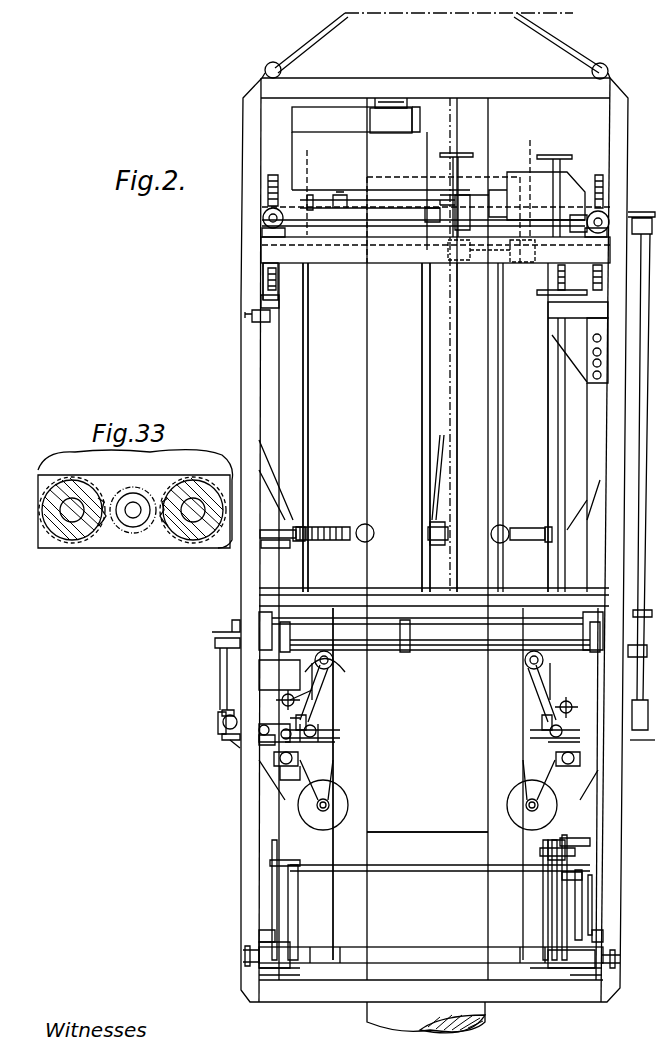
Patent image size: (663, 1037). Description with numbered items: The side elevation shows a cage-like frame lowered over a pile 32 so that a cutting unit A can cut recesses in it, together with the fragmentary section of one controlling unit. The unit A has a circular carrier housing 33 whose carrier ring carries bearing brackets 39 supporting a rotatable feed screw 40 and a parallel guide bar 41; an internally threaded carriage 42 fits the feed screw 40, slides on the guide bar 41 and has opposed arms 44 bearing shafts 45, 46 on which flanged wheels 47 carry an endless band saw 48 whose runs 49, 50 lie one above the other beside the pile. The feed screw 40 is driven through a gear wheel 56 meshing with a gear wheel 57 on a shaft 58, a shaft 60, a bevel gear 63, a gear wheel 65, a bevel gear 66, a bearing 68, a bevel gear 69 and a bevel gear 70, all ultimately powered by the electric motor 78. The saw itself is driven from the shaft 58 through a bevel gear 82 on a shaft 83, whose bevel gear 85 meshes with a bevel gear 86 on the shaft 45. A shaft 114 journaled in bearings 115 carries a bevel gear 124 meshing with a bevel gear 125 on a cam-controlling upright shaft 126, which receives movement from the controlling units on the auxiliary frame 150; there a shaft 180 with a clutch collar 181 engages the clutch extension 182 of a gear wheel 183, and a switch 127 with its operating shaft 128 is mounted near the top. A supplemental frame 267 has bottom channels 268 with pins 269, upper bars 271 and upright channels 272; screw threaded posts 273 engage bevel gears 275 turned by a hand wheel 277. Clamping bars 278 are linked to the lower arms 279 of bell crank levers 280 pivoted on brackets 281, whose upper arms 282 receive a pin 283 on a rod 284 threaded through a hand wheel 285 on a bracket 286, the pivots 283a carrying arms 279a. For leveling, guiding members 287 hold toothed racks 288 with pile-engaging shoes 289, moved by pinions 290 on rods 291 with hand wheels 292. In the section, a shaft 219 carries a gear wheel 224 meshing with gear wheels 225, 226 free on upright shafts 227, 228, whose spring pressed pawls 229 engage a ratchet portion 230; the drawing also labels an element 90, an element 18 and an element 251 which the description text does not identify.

In FIG. 2, the switch 127 is at (392, 106).
In FIG. 2, the operating shaft 128 is at (356, 120).
In FIG. 2, the auxiliary frame 150 is at (315, 143).
In FIG. 33, the auxiliary frame 150 is at (105, 570).
In FIG. 2, the hand wheel 292 is at (322, 155).
In FIG. 2, the electric motor 78 is at (517, 180).
In FIG. 2, the shaft 180 is at (360, 200).
In FIG. 2, the gear wheel 183 is at (468, 196).
In FIG. 2, the clutch collar 181 is at (441, 214).
In FIG. 2, the hand wheel 277 is at (568, 212).
In FIG. 2, the clutch extension 182 is at (470, 212).
In FIG. 2, the bevel gear 275 is at (262, 242).
In FIG. 2, the screw threaded post 273 is at (268, 200).
In FIG. 2, the upper bar 271 is at (252, 316).
In FIG. 2, the rod 284 is at (558, 270).
In FIG. 2, the hand wheel 285 is at (545, 296).
In FIG. 2, the bracket 286 is at (565, 345).
In FIG. 2, the supplemental frame 267 is at (265, 350).
In FIG. 2, the upright channel 272 is at (285, 405).
In FIG. 2, the cam-controlling upright shaft 126 is at (425, 407).
In FIG. 2, the rod 291 is at (312, 460).
In FIG. 2, the pile 32 is at (500, 488).
In FIG. 2, the toothed rack 288 is at (338, 527).
In FIG. 2, the pile-engaging shoe 289 is at (368, 530).
In FIG. 2, the pinion 290 is at (460, 550).
In FIG. 2, the guiding member 287 is at (315, 548).
In FIG. 2, the bevel gear 125 is at (415, 620).
In FIG. 2, the bearing 115 is at (284, 626).
In FIG. 2, the bevel gear 86 is at (330, 668).
In FIG. 2, the shaft 114 is at (310, 640).
In FIG. 2, the run 49 is at (450, 650).
In FIG. 2, the bevel gear 124 is at (408, 650).
In FIG. 2, the bearing 68 is at (215, 644).
In FIG. 2, the bevel gear 69 is at (220, 676).
In FIG. 2, the shaft 60 is at (220, 716).
In FIG. 2, the block 90 is at (218, 718).
In FIG. 2, the bevel gear 66 is at (222, 737).
In FIG. 2, the gear wheel 65 is at (232, 748).
In FIG. 2, the carrier housing 33 is at (259, 740).
In FIG. 2, the bearing bracket 39 is at (272, 742).
In FIG. 2, the bevel gear 85 is at (310, 662).
In FIG. 2, the feed screw 40 is at (286, 694).
In FIG. 2, the shaft 45 is at (340, 668).
In FIG. 2, the arm 44 is at (430, 734).
In FIG. 2, the flanged wheel 47 is at (340, 680).
In FIG. 2, the shaft 83 is at (320, 695).
In FIG. 2, the gear wheel 56 is at (424, 719).
In FIG. 2, the bevel gear 82 is at (431, 732).
In FIG. 2, the shaft 58 is at (431, 733).
In FIG. 2, the gear wheel 57 is at (300, 745).
In FIG. 2, the carriage 42 is at (333, 735).
In FIG. 2, the cutting unit A is at (424, 757).
In FIG. 2, the guide bar 41 is at (286, 766).
In FIG. 2, the shaft 46 is at (427, 795).
In FIG. 2, the band saw 48 is at (388, 832).
In FIG. 2, the run 50 is at (428, 832).
In FIG. 2, the pivot 283a is at (422, 866).
In FIG. 2, the bell crank lever 280 is at (545, 858).
In FIG. 2, the upper arm 282 is at (580, 845).
In FIG. 2, the pin 283 is at (582, 876).
In FIG. 2, the arm 279a is at (290, 905).
In FIG. 2, the lower arm 279 is at (562, 896).
In FIG. 2, the clamping bar 278 is at (505, 947).
In FIG. 2, the bracket 281 is at (265, 905).
In FIG. 2, the pin 269 is at (243, 956).
In FIG. 2, the bottom channel 268 is at (258, 972).
In FIG. 2, the bevel gear 70 is at (642, 213).
In FIG. 2, the rod 18 is at (645, 380).
In FIG. 2, the bevel gear 63 is at (632, 742).
In FIG. 33, the gear wheel 225 is at (70, 542).
In FIG. 33, the gear wheel 226 is at (200, 540).
In FIG. 33, the shaft 219 is at (133, 502).
In FIG. 33, the spring pressed pawl 229 is at (95, 495).
In FIG. 33, the ratchet portion 230 is at (70, 480).
In FIG. 33, the gear wheel 224 is at (130, 548).
In FIG. 33, the shaft 251 is at (170, 548).
In FIG. 33, the upright shaft 227 is at (88, 548).
In FIG. 33, the upright shaft 228 is at (222, 548).